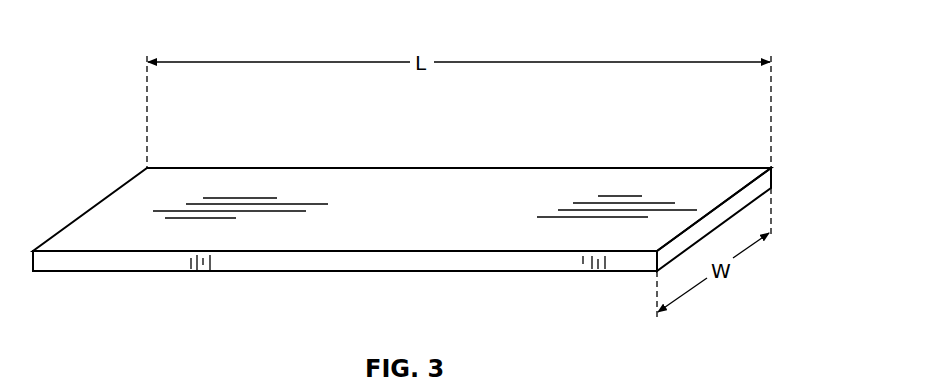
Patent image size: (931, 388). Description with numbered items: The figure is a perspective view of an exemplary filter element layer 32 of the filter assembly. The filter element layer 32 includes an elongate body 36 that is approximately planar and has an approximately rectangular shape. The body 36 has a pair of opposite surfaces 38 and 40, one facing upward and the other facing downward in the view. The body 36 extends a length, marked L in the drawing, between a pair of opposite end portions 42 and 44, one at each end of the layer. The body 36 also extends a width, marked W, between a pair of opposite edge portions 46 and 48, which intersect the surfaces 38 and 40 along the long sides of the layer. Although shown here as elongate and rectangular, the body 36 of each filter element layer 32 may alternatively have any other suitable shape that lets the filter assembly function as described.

The filter element layer 32 is at (110, 60).
The elongate body 36 is at (540, 265).
The surface 38 is at (205, 176).
The surface 40 is at (89, 273).
The end portion 42 is at (731, 185).
The end portion 44 is at (99, 219).
The edge portion 46 is at (272, 265).
The edge portion 48 is at (368, 157).